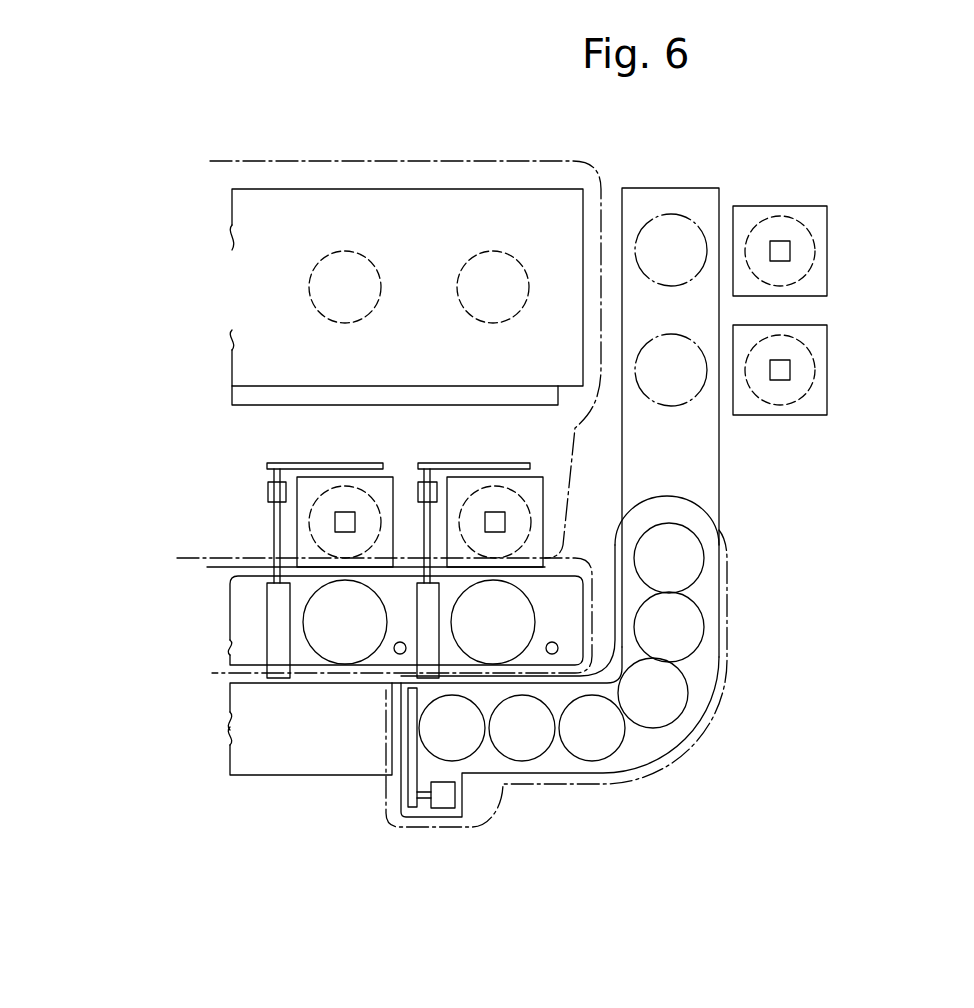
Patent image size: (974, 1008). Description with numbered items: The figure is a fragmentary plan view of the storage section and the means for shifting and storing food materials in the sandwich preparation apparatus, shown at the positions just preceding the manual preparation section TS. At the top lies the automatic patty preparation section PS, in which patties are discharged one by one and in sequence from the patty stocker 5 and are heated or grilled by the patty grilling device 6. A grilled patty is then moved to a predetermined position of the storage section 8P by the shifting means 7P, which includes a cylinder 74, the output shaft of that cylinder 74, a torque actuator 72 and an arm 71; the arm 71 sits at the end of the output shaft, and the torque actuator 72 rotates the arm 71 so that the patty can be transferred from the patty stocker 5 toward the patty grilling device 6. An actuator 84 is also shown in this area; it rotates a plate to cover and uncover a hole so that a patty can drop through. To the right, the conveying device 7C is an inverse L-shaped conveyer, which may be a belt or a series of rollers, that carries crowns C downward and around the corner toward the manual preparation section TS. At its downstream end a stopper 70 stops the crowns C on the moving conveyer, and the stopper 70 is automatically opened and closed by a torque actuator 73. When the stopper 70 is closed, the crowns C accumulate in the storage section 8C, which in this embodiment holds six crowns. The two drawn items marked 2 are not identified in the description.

The automatic patty preparation section PS is at (358, 161).
The patty stocker 5 is at (441, 210).
The guide rollers 2 is at (815, 340).
The patty grilling device 6 is at (300, 543).
The arm 71 is at (300, 462).
The torque actuator 72 is at (270, 488).
The cylinder 74 is at (280, 632).
The storage section 8P is at (218, 572).
The shifting means 7P is at (258, 602).
The actuator 84 is at (397, 654).
The manual preparation section TS is at (270, 765).
The crowns C is at (690, 632).
The conveying device 7C is at (700, 486).
The storage section 8C is at (716, 730).
The stopper 70 is at (412, 795).
The torque actuator 73 is at (447, 798).